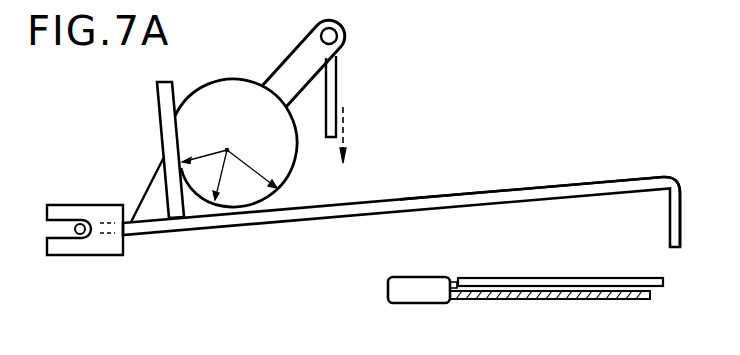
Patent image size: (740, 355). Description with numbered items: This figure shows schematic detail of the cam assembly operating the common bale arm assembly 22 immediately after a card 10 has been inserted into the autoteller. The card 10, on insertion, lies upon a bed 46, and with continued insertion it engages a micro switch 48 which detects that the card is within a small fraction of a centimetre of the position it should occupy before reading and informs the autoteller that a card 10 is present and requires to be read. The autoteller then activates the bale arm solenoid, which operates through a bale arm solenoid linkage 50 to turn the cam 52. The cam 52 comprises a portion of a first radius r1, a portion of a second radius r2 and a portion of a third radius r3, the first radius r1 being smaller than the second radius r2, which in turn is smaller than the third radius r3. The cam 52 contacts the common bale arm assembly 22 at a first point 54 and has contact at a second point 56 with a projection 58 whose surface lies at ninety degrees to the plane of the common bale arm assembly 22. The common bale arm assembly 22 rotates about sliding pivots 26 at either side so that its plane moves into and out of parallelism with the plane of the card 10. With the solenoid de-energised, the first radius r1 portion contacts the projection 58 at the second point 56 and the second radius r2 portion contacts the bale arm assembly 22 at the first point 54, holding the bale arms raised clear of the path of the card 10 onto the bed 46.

The card 10 is at (642, 277).
The common bale arm assembly 22 is at (528, 190).
The sliding pivots 26 is at (103, 245).
The bed 46 is at (627, 298).
The micro switch 48 is at (393, 292).
The bale arm solenoid linkage 50 is at (332, 80).
The cam 52 is at (245, 92).
The first point 54 is at (240, 215).
The second point 56 is at (177, 117).
The projection 58 is at (160, 127).
The first radius r1 is at (202, 148).
The second radius r2 is at (236, 152).
The third radius r3 is at (252, 160).